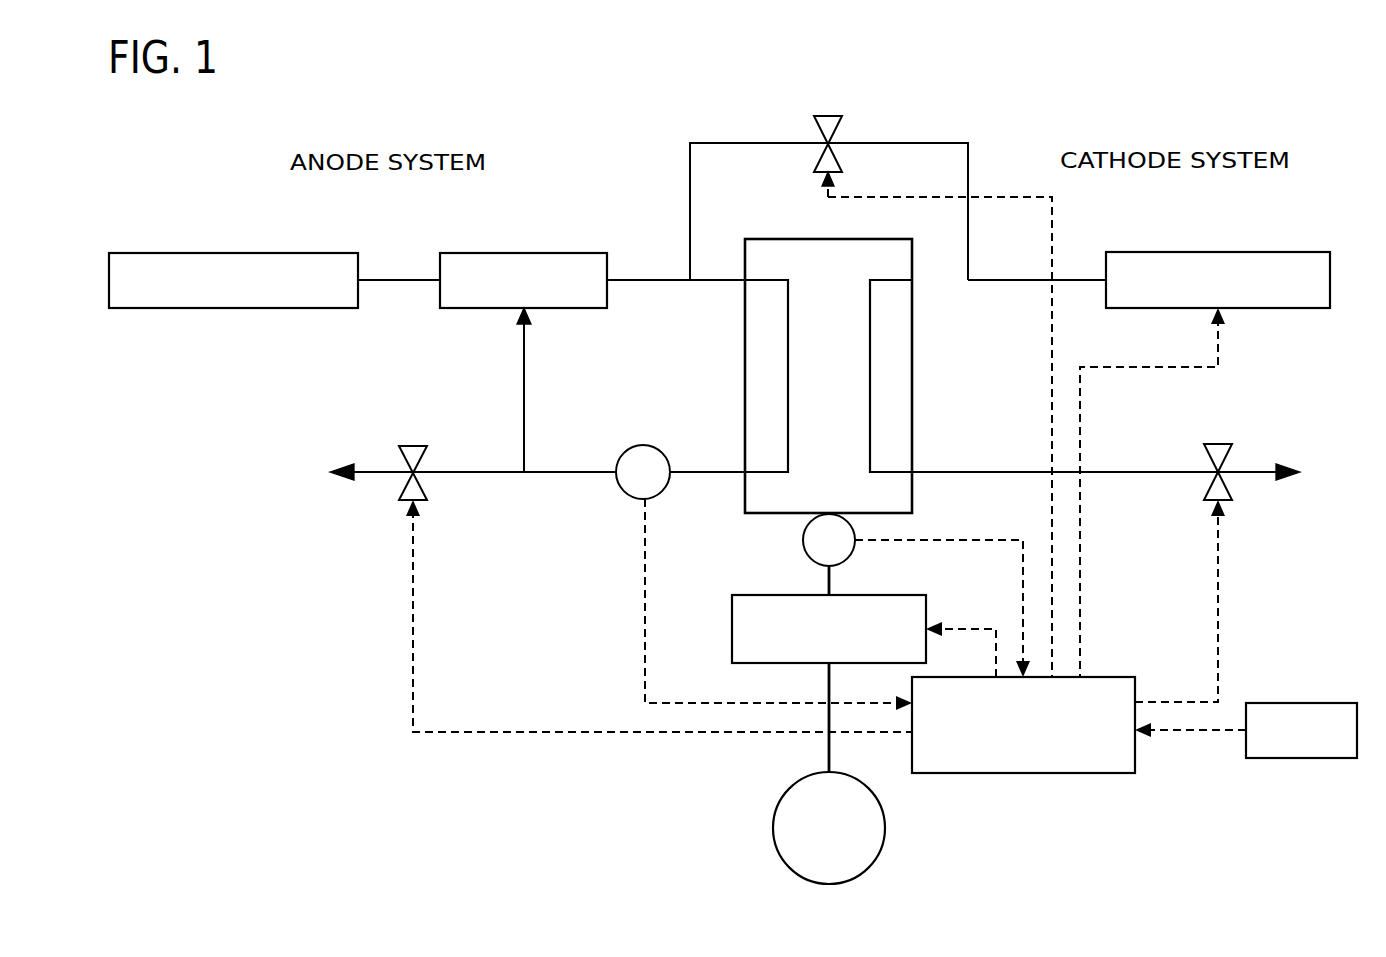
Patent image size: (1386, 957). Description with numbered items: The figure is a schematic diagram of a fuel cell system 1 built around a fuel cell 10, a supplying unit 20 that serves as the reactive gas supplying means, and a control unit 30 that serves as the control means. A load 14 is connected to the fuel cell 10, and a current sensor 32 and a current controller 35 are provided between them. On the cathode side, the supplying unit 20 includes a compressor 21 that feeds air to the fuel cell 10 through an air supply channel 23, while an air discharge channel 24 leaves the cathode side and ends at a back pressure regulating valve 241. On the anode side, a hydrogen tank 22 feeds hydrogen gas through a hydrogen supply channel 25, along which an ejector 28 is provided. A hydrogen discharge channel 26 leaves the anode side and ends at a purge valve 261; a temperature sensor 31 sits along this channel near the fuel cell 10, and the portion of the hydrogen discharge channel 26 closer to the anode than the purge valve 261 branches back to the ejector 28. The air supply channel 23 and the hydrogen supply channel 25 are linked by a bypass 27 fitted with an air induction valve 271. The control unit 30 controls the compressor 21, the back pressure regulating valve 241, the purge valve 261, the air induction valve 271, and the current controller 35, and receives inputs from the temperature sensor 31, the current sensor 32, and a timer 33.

The fuel cell system 1 is at (1280, 128).
The fuel cell 10 is at (744, 237).
The load 14 is at (886, 828).
The supplying unit 20 is at (1005, 271).
The compressor 21 is at (1260, 251).
The hydrogen tank 22 is at (234, 252).
The air supply channel 23 is at (1000, 284).
The air discharge channel 24 is at (989, 470).
The hydrogen supply channel 25 is at (668, 284).
The hydrogen discharge channel 26 is at (589, 470).
The bypass 27 is at (934, 141).
The ejector 28 is at (555, 252).
The control unit 30 is at (1074, 775).
The temperature sensor 31 is at (645, 444).
The current sensor 32 is at (803, 540).
The timer 33 is at (1336, 760).
The current controller 35 is at (732, 620).
The back pressure regulating valve 241 is at (1240, 497).
The purge valve 261 is at (437, 485).
The air induction valve 271 is at (812, 137).